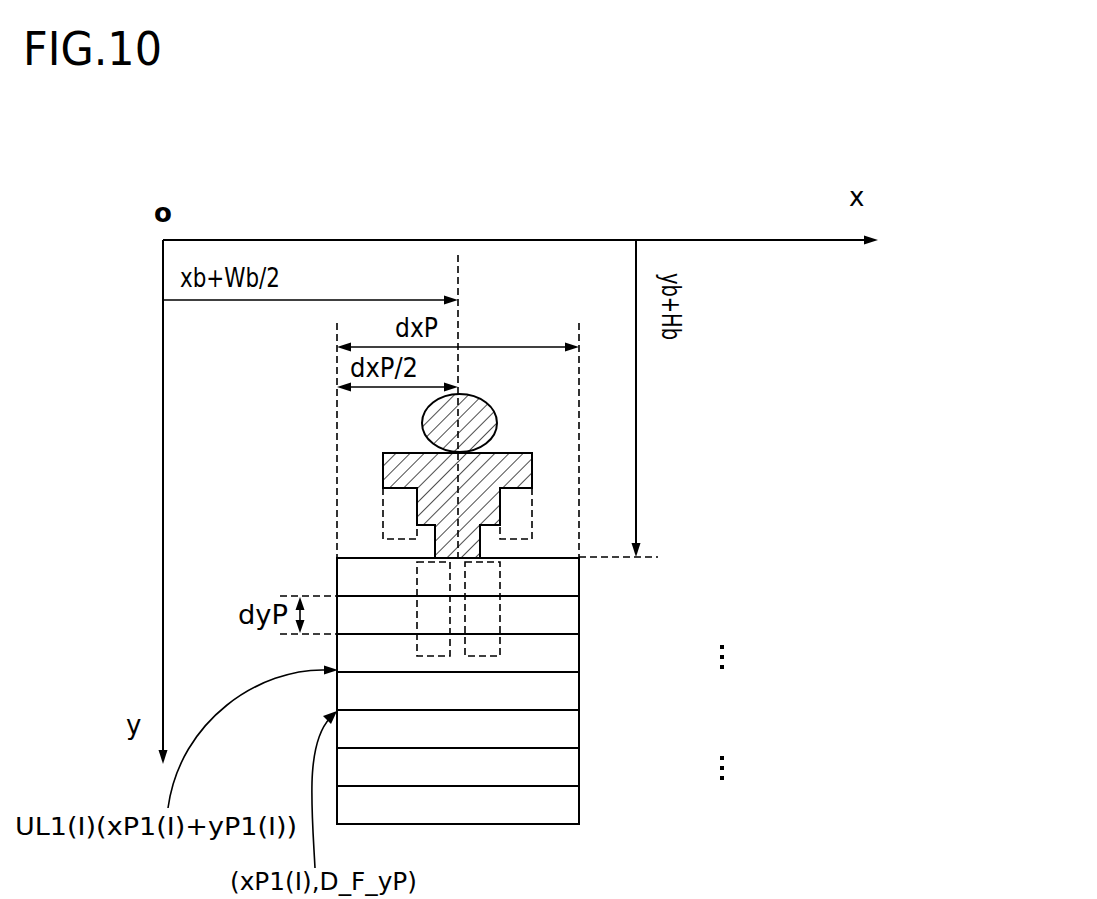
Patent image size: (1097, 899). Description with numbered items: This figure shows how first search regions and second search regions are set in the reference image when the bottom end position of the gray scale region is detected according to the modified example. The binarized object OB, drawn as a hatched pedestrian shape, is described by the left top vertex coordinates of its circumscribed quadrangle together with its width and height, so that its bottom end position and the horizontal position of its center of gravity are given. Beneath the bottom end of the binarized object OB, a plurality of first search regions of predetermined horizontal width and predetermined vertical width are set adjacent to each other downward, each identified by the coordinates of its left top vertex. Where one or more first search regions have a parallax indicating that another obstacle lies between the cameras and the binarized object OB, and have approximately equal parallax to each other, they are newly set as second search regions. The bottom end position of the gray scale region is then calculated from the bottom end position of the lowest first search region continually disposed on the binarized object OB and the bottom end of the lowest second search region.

The binarized object OB is at (420, 428).